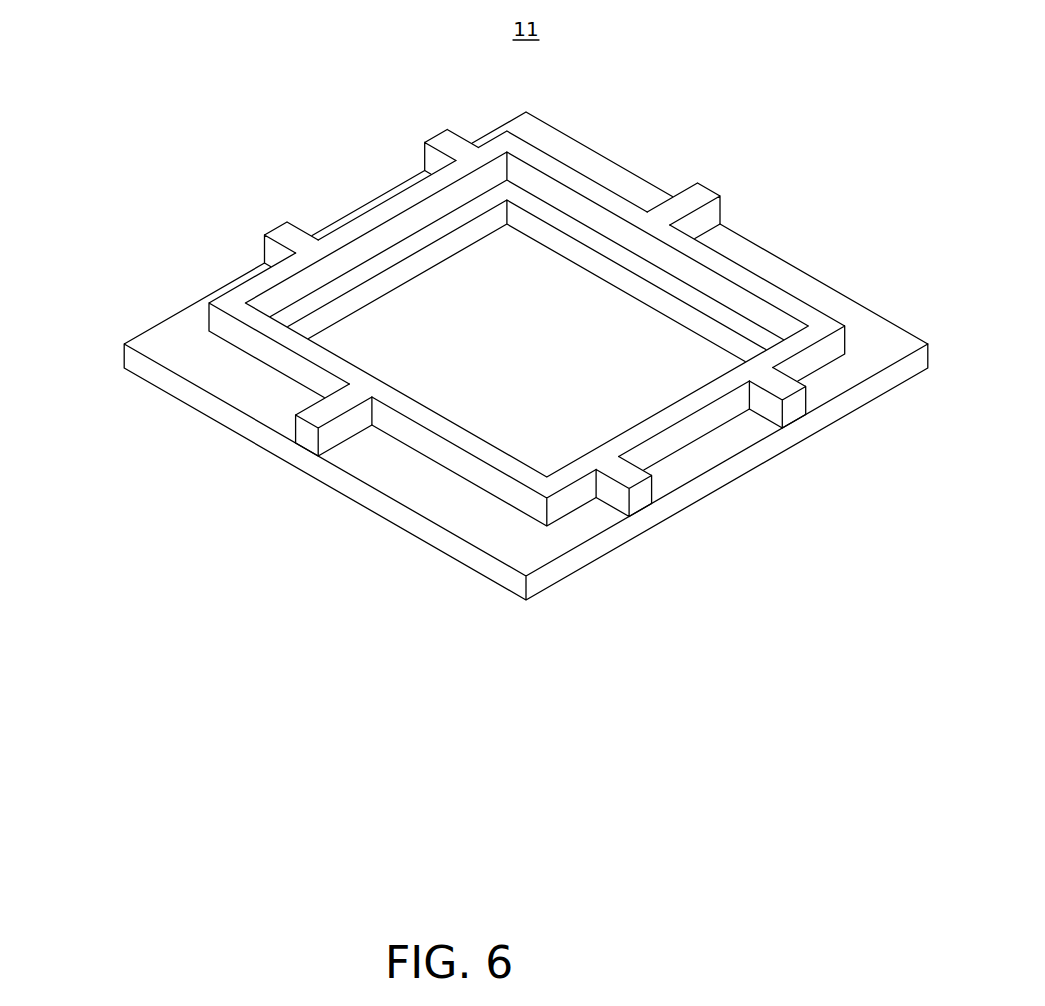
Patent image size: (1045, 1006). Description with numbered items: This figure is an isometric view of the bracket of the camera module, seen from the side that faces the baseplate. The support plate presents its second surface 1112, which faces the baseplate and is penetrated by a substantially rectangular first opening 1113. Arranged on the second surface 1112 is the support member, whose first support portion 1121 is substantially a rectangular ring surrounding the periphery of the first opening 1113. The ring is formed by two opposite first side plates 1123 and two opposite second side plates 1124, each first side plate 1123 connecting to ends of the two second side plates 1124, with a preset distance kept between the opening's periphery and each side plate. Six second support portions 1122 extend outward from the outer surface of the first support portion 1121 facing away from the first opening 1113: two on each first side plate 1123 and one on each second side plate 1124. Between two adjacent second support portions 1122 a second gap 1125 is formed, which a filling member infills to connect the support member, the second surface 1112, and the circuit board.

The second surface 1112 is at (437, 500).
The first opening 1113 is at (520, 256).
The first support portion 1121 is at (122, 246).
The second support portions 1122 is at (444, 138).
The first side plates 1123 is at (297, 287).
The second side plates 1124 is at (258, 320).
The second gap 1125 is at (770, 262).